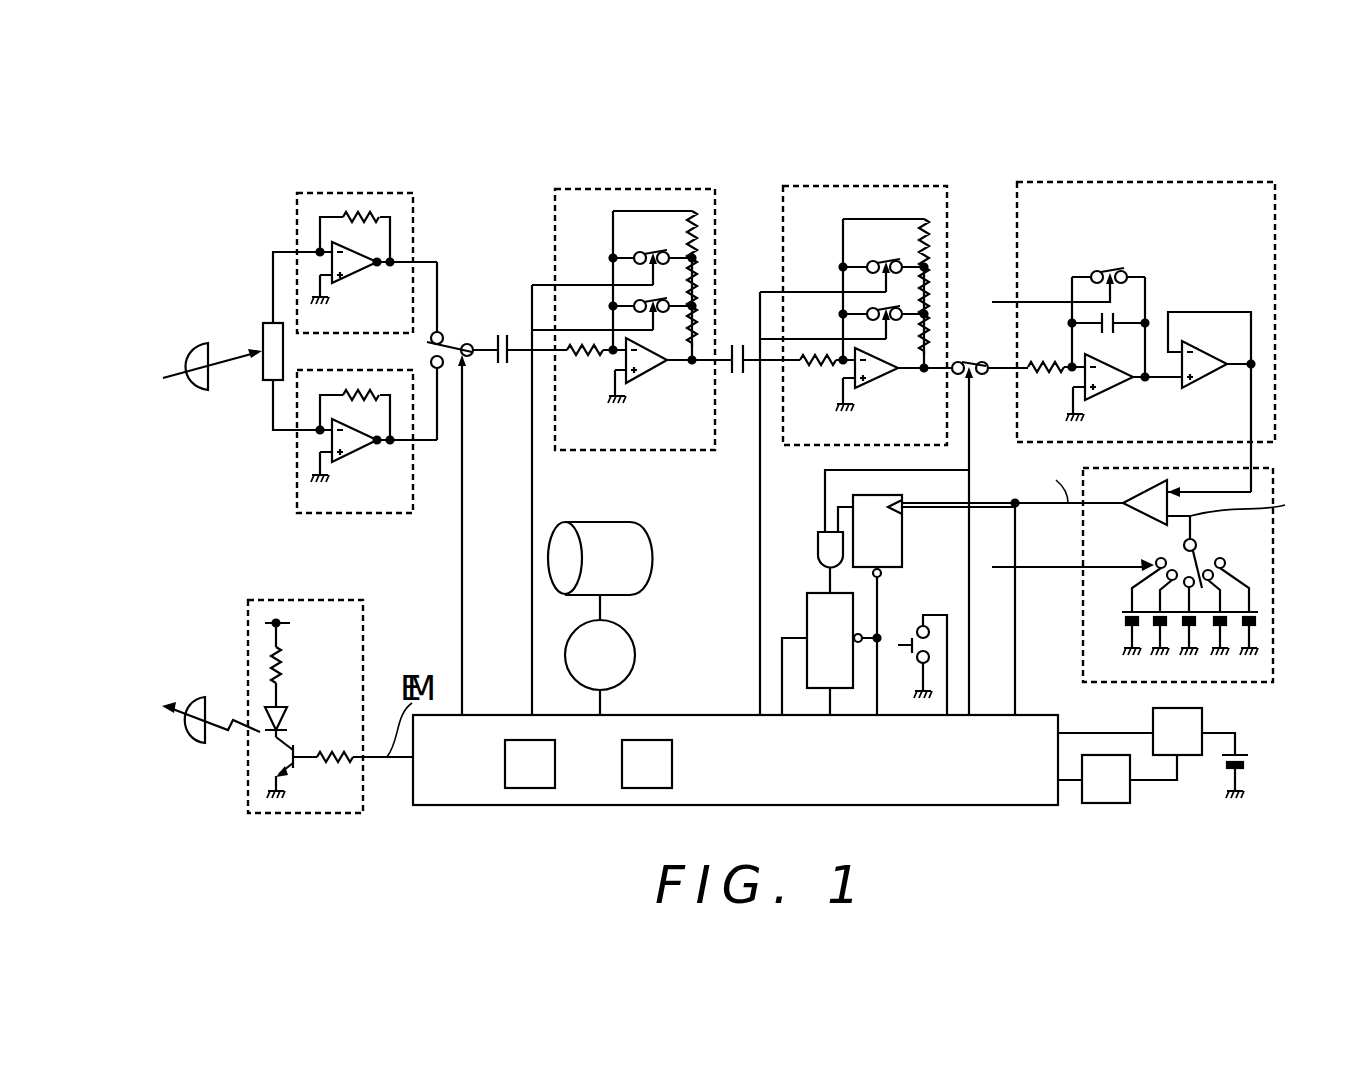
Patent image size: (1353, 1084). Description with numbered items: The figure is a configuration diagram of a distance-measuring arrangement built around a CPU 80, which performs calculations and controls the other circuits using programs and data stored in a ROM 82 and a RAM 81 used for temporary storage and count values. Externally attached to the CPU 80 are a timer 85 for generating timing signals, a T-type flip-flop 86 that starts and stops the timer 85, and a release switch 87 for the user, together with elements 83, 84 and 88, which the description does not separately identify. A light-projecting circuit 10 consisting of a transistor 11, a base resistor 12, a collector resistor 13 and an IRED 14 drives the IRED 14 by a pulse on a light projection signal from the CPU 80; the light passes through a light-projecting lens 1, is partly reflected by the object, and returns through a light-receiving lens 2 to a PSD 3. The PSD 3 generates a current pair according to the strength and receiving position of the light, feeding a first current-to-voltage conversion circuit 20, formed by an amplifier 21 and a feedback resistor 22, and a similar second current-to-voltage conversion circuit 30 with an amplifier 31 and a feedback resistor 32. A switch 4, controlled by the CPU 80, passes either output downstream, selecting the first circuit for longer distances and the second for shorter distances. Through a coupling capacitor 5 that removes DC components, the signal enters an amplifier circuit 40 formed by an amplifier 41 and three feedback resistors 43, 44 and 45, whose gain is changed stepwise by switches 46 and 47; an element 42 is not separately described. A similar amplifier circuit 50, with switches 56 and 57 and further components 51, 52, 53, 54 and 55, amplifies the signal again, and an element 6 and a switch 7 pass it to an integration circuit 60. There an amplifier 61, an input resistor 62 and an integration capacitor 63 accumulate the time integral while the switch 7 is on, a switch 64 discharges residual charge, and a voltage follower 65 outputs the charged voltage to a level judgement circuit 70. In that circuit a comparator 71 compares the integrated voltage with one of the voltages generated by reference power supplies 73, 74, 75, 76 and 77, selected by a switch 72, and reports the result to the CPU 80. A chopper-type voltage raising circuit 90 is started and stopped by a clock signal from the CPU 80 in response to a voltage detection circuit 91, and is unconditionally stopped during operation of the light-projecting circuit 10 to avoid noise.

The light-projecting lens 1 is at (192, 700).
The light-receiving lens 2 is at (190, 343).
The PSD 3 is at (265, 330).
The switch 4 is at (446, 335).
The coupling capacitor 5 is at (505, 335).
The capacitor 6 is at (738, 374).
The switch 7 is at (972, 364).
The light-projecting circuit 10 is at (290, 600).
The transistor 11 is at (290, 742).
The base resistor 12 is at (328, 762).
The collector resistor 13 is at (288, 652).
The IRED 14 is at (288, 698).
The first current-to-voltage conversion circuit 20 is at (355, 513).
The amplifier 21 is at (364, 453).
The feedback resistor 22 is at (356, 394).
The second current-to-voltage conversion circuit 30 is at (392, 193).
The amplifier 31 is at (364, 274).
The feedback resistor 32 is at (356, 216).
The amplifier circuit 40 is at (645, 189).
The amplifier 41 is at (651, 373).
The input resistor 42 is at (588, 357).
The feedback resistor 43 is at (705, 336).
The feedback resistor 44 is at (705, 292).
The feedback resistor 45 is at (705, 240).
The switch 46 is at (648, 253).
The switch 47 is at (648, 301).
The amplifier circuit 50 is at (876, 186).
The operational amplifier 51 is at (884, 382).
The input resistor 52 is at (812, 366).
The feedback resistor 53 is at (938, 342).
The feedback resistor 54 is at (938, 290).
The feedback resistor 55 is at (938, 238).
The switch 56 is at (880, 262).
The switch 57 is at (880, 309).
The integration circuit 60 is at (1105, 182).
The amplifier 61 is at (1120, 388).
The input resistor 62 is at (1045, 374).
The integration capacitor 63 is at (1092, 321).
The switch 64 is at (1100, 270).
The voltage follower 65 is at (1194, 384).
The level judgement circuit 70 is at (1273, 468).
The comparator 71 is at (1143, 520).
The switch 72 is at (1225, 558).
The reference power supply 73 is at (1140, 580).
The reference power supply 74 is at (1138, 586).
The reference power supply 75 is at (1122, 612).
The reference power supply 76 is at (1244, 606).
The reference power supply 77 is at (1255, 626).
The CPU 80 is at (645, 713).
The RAM 81 is at (556, 765).
The ROM 82 is at (673, 765).
The motor 83 is at (636, 652).
The lens barrel 84 is at (652, 560).
The timer 85 is at (807, 612).
The T-type flip-flop 86 is at (902, 548).
The release switch 87 is at (914, 636).
The AND gate 88 is at (818, 541).
The voltage raising circuit 90 is at (1185, 755).
The voltage detection circuit 91 is at (1105, 803).